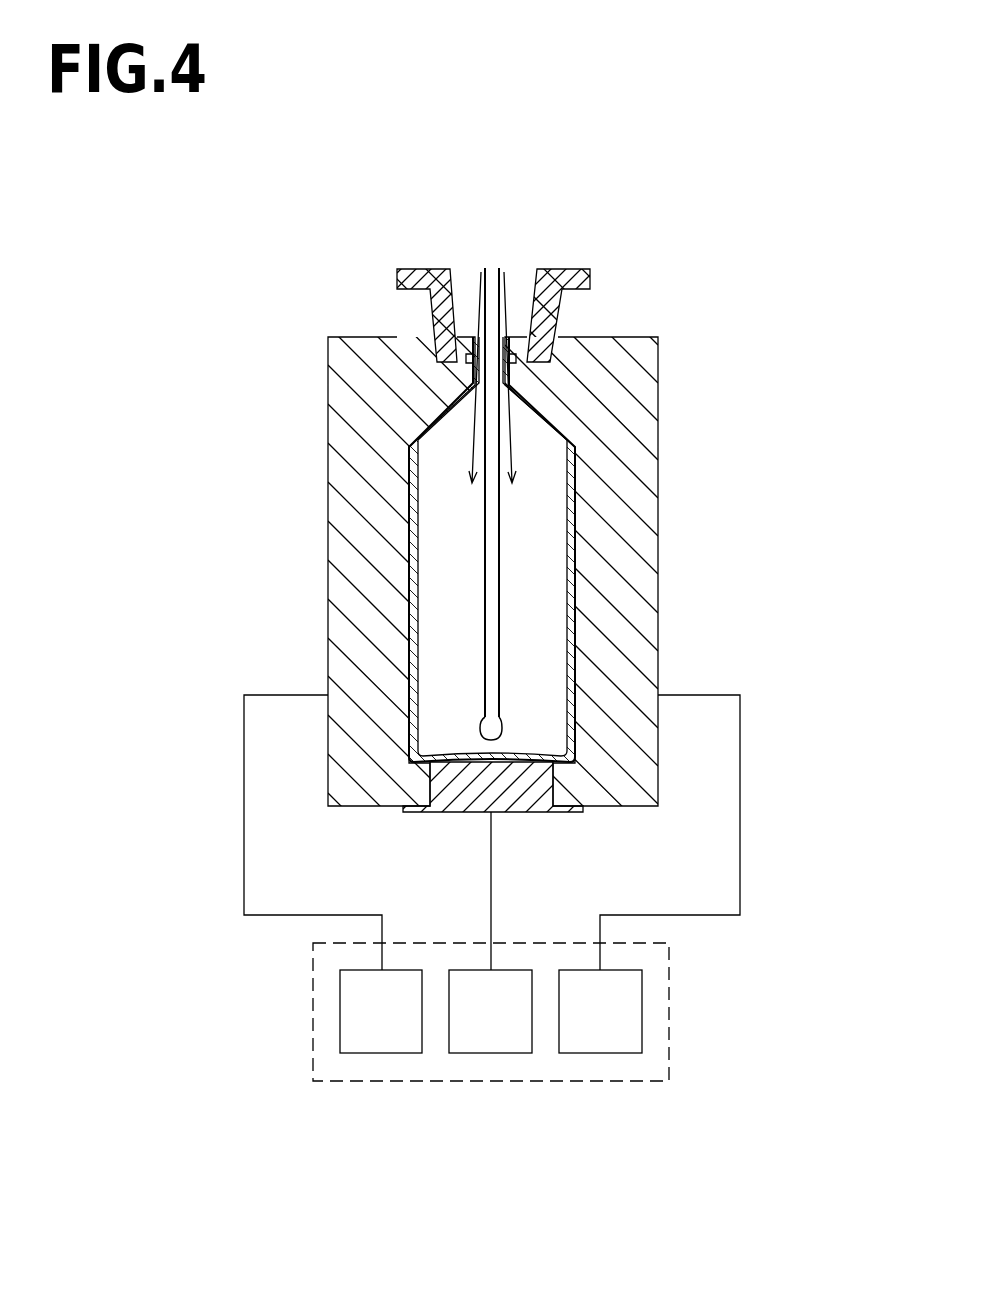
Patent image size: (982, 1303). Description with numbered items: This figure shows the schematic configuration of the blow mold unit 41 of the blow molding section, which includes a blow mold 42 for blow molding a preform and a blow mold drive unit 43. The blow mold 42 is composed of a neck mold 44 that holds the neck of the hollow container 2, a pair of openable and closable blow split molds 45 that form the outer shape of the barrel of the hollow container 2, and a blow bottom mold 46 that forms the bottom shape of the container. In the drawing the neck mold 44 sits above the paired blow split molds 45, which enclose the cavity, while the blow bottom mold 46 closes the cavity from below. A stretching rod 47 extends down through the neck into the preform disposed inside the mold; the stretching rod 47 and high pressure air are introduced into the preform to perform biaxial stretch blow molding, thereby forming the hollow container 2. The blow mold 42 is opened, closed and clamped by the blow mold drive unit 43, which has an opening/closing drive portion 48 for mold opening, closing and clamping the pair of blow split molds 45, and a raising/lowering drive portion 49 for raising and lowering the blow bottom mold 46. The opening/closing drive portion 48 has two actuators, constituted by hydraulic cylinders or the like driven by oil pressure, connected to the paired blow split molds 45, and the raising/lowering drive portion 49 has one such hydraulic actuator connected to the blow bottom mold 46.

The blow mold unit 41 is at (718, 222).
The blow mold 42 is at (725, 358).
The blow mold drive unit 43 is at (669, 1006).
The neck mold 44 is at (558, 315).
The blow split molds 45 is at (362, 540).
The blow bottom mold 46 is at (523, 792).
The stretching rod 47 is at (488, 630).
The opening/closing drive portion 48 is at (385, 1035).
The raising/lowering drive portion 49 is at (488, 1040).
The hollow container 2 is at (573, 630).